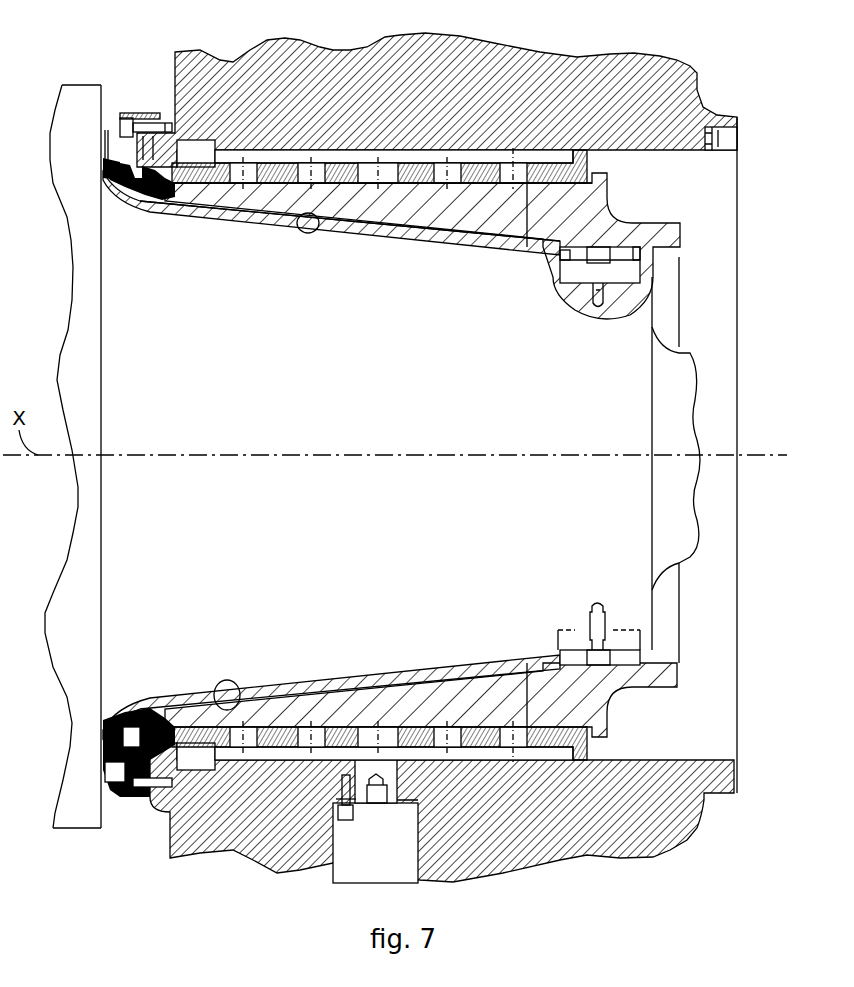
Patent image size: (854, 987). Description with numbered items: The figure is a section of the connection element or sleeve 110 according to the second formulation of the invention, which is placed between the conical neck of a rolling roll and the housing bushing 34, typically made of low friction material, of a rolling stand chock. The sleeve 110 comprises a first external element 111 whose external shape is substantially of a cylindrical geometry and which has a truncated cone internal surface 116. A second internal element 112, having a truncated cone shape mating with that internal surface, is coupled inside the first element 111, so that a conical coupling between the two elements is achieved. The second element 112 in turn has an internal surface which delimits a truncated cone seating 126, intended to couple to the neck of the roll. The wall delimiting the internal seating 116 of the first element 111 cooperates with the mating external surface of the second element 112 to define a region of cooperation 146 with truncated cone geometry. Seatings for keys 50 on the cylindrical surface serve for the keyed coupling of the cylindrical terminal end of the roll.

The connection element or sleeve 110 is at (690, 195).
The truncated cone internal surface 116 is at (330, 215).
The region of cooperation 146 is at (380, 236).
The first external element 111 is at (449, 207).
The second internal element 112 is at (507, 235).
The seatings for keys 50 is at (660, 247).
The housing bushing 34 is at (477, 733).
The truncated cone seating 126 is at (240, 700).